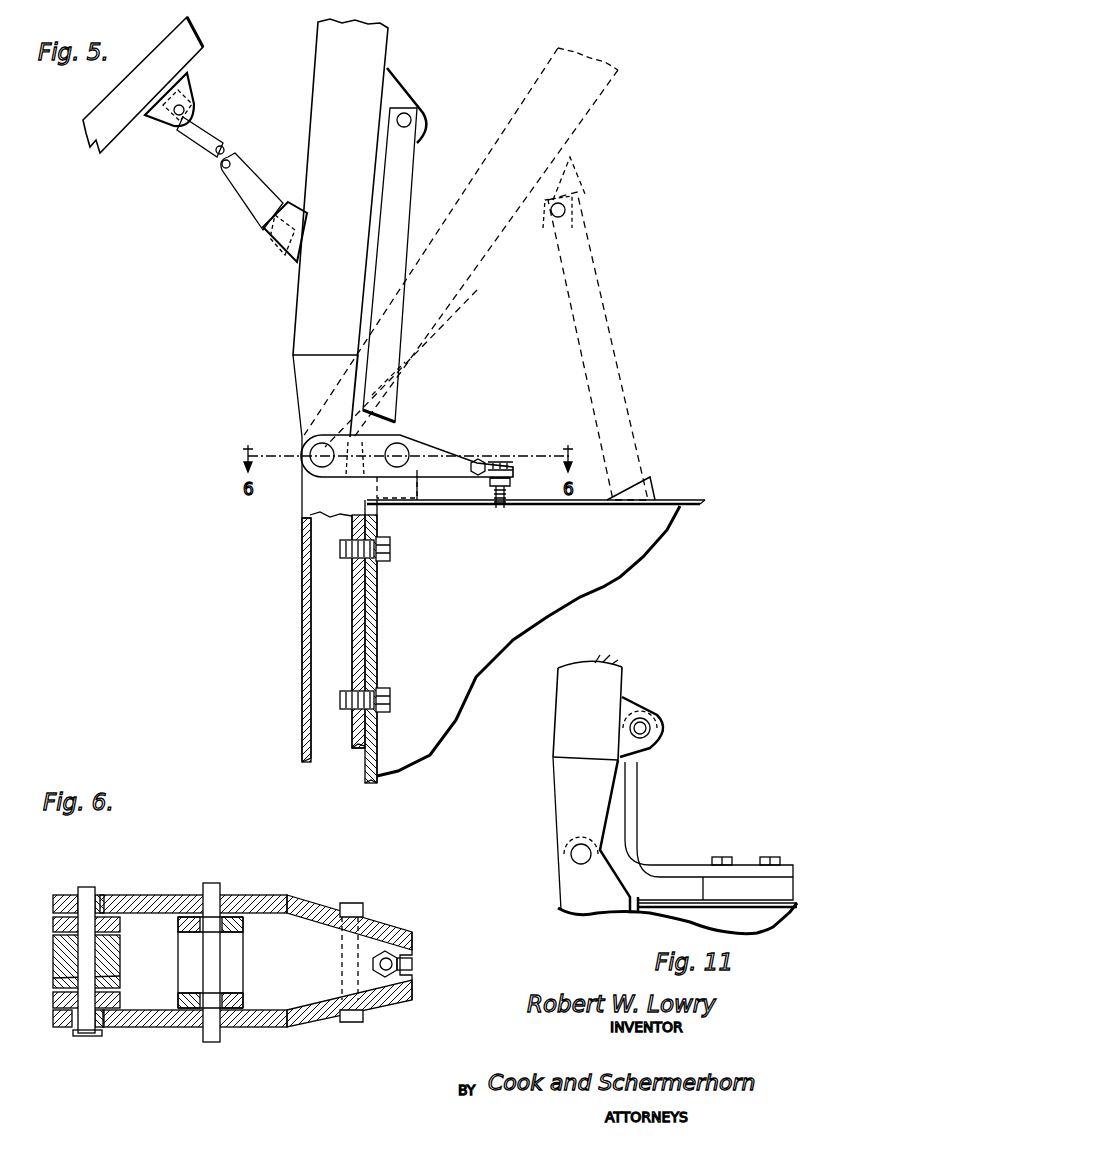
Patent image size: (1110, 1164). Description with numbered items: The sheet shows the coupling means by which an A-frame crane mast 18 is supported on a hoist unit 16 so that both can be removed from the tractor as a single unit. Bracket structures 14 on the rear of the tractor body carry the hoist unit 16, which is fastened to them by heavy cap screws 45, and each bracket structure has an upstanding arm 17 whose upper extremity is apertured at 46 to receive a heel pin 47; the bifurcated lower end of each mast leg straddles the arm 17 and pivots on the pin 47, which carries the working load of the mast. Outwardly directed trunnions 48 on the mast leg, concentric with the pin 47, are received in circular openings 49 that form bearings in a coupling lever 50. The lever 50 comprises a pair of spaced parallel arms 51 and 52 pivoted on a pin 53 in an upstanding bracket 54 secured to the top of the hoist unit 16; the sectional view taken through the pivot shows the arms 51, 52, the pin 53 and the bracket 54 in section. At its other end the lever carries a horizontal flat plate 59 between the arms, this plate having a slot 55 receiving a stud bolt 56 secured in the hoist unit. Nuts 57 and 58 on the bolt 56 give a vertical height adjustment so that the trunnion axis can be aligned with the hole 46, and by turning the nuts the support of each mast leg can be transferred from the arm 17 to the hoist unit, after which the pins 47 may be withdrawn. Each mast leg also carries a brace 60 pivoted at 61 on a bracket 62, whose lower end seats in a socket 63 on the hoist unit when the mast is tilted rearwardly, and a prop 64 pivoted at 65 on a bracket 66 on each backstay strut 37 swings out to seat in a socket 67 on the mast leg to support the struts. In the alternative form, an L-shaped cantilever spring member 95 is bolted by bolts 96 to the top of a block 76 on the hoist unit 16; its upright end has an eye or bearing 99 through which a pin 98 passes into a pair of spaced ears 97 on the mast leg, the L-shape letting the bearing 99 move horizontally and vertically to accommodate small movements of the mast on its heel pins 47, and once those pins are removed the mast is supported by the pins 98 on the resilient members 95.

In FIG. 5, the bracket structure 14 is at (296, 662).
In FIG. 5, the hoist unit 16 is at (630, 553).
In FIG. 11, the hoist unit 16 is at (770, 918).
In FIG. 5, the upstanding arm 17 is at (305, 510).
In FIG. 6, the upstanding arm 17 is at (53, 962).
In FIG. 11, the upstanding arm 17 is at (565, 893).
In FIG. 5, the A-frame crane mast 18 is at (322, 62).
In FIG. 6, the A-frame crane mast 18 is at (53, 922).
In FIG. 11, the A-frame crane mast 18 is at (556, 808).
In FIG. 5, the backstay strut 37 is at (108, 148).
In FIG. 5, the cap screw 45 is at (392, 556).
In FIG. 6, the aperture 46 is at (60, 979).
In FIG. 5, the heel pin 47 is at (310, 450).
In FIG. 6, the heel pin 47 is at (80, 890).
In FIG. 11, the heel pin 47 is at (571, 856).
In FIG. 6, the trunnion 48 is at (100, 893).
In FIG. 6, the circular opening 49 is at (72, 1032).
In FIG. 5, the coupling lever 50 is at (437, 437).
In FIG. 6, the coupling lever 50 is at (158, 1028).
In FIG. 6, the arm of coupling lever 51 is at (258, 895).
In FIG. 6, the arm of coupling lever 52 is at (258, 1030).
In FIG. 5, the pin 53 is at (398, 445).
In FIG. 6, the pin 53 is at (212, 883).
In FIG. 5, the upstanding bracket 54 is at (418, 486).
In FIG. 6, the upstanding bracket 54 is at (178, 930).
In FIG. 6, the slot 55 is at (412, 964).
In FIG. 5, the stud bolt 56 is at (490, 492).
In FIG. 6, the stud bolt 56 is at (405, 972).
In FIG. 5, the nut 57 is at (490, 462).
In FIG. 5, the nut 58 is at (508, 484).
In FIG. 6, the horizontal flat plate 59 is at (392, 962).
In FIG. 5, the brace 60 is at (410, 190).
In FIG. 5, the pivot 61 is at (567, 212).
In FIG. 5, the bracket 62 is at (400, 95).
In FIG. 5, the socket 63 is at (630, 492).
In FIG. 5, the prop 64 is at (232, 190).
In FIG. 5, the pivot 65 is at (186, 110).
In FIG. 5, the bracket 66 is at (190, 88).
In FIG. 5, the socket 67 is at (272, 235).
In FIG. 11, the block 76 is at (748, 880).
In FIG. 11, the L-shaped cantilever spring member 95 is at (637, 810).
In FIG. 11, the bolt 96 is at (720, 857).
In FIG. 11, the ear 97 is at (633, 702).
In FIG. 11, the pin 98 is at (650, 742).
In FIG. 11, the eye or bearing 99 is at (655, 726).